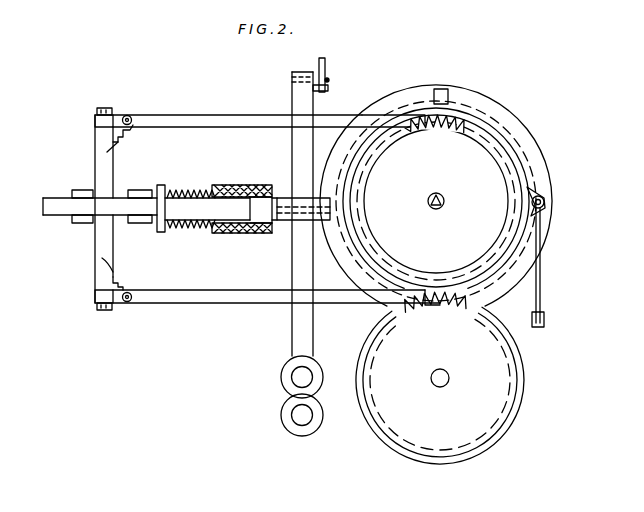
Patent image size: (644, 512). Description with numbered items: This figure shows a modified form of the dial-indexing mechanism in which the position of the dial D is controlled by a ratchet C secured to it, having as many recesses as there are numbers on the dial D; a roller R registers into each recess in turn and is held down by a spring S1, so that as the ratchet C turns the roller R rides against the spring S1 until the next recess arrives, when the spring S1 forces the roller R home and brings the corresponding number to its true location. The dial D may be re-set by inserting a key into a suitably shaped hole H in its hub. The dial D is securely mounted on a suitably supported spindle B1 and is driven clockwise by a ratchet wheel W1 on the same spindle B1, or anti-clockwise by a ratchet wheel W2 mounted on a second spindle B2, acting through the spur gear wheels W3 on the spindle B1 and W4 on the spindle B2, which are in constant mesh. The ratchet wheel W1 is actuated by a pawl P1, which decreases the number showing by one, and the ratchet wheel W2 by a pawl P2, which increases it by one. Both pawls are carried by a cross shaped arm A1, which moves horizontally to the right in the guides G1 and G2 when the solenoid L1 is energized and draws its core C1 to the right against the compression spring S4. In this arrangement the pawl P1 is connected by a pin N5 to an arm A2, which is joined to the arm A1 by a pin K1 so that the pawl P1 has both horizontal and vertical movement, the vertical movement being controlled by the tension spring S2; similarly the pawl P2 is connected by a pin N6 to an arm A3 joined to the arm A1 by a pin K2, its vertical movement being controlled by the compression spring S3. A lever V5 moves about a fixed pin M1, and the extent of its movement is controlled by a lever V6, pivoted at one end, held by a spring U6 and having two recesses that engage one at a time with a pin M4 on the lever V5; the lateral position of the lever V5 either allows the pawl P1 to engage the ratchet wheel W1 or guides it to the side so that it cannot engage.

The cross shaped arm A1 is at (108, 172).
The arm A2 is at (118, 113).
The arm A3 is at (120, 304).
The pin K1 is at (95, 117).
The pin K2 is at (95, 295).
The pin N5 is at (131, 116).
The pin N6 is at (131, 300).
The pawl P1 is at (183, 114).
The pawl P2 is at (213, 296).
The spring S2 is at (147, 117).
The spring S3 is at (122, 266).
The spring S4 is at (190, 231).
The guide G1 is at (85, 224).
The guide G2 is at (146, 225).
The core C1 is at (212, 213).
The solenoid L1 is at (256, 233).
The fixed pin M1 is at (285, 193).
The lever V5 is at (292, 273).
The spring U6 is at (325, 67).
The pin M4 is at (329, 82).
The lever V6 is at (328, 88).
The dial D is at (518, 118).
The spur gear wheel W3 is at (513, 143).
The ratchet wheel W1 is at (436, 201).
The ratchet wheel W2 is at (435, 311).
The spur gear wheel W4 is at (522, 386).
The hole H is at (446, 201).
The spindle B1 is at (428, 201).
The spindle B2 is at (430, 377).
The ratchet C is at (534, 186).
The roller R is at (545, 202).
The spring S1 is at (542, 287).